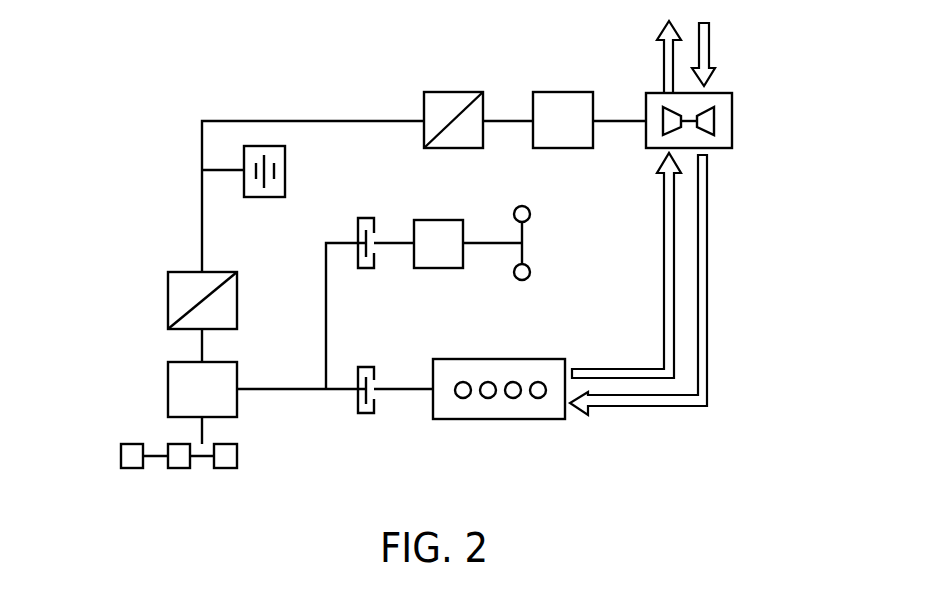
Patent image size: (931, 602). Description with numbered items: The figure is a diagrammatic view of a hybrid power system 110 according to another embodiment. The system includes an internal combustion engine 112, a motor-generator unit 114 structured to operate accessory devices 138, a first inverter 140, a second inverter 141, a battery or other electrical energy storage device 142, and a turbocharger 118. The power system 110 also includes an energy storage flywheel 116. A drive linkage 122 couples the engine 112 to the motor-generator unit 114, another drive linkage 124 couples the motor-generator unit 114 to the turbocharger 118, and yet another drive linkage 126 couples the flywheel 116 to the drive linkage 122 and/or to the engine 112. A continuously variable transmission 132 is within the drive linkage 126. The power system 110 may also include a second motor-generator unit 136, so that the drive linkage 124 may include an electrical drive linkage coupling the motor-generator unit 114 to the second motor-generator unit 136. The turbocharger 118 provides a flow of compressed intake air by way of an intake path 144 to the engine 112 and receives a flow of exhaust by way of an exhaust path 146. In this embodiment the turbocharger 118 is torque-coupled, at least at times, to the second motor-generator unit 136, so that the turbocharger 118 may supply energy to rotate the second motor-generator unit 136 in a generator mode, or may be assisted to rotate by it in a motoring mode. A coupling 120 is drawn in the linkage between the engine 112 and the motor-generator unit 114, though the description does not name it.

The hybrid power system 110 is at (794, 195).
The internal combustion engine 112 is at (458, 359).
The motor-generator unit 114 is at (168, 372).
The energy storage flywheel 116 is at (530, 210).
The turbocharger 118 is at (733, 105).
The coupling 120 is at (338, 392).
The drive linkage 122 is at (311, 396).
The drive linkage 124 is at (196, 148).
The drive linkage 126 is at (318, 266).
The continuously variable transmission 132 is at (437, 220).
The second motor-generator unit 136 is at (550, 92).
The accessory devices 138 is at (110, 458).
The first inverter 140 is at (168, 282).
The second inverter 141 is at (437, 92).
The electrical energy storage device 142 is at (285, 152).
The intake path 144 is at (709, 258).
The exhaust path 146 is at (662, 258).